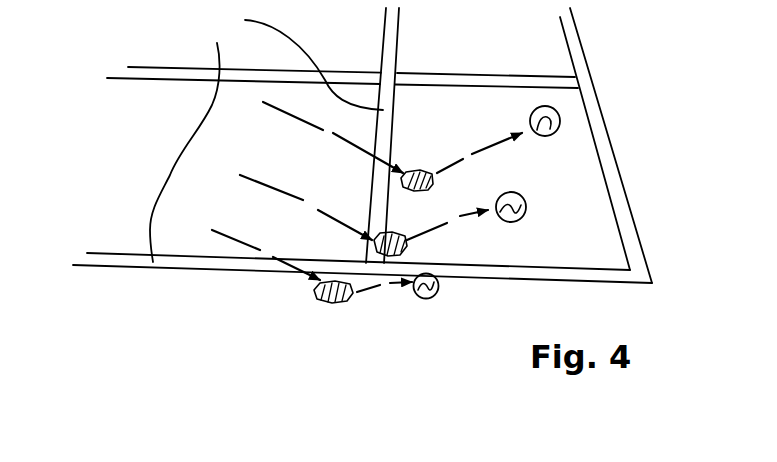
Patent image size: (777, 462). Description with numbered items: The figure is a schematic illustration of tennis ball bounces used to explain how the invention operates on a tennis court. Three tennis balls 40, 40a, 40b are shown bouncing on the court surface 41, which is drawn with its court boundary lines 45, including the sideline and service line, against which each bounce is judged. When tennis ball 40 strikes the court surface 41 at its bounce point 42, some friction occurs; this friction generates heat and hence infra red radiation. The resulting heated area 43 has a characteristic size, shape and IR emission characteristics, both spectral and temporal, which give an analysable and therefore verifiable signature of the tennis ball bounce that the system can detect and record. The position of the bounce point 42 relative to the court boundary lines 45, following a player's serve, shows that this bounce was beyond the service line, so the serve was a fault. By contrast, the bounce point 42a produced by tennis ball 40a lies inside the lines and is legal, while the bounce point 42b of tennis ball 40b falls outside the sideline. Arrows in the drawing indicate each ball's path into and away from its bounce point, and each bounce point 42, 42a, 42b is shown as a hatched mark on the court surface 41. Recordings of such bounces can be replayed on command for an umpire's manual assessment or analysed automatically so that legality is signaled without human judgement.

The tennis ball 40 is at (562, 118).
The tennis ball 40a is at (523, 196).
The tennis ball 40b is at (433, 297).
The court surface 41 is at (412, 135).
The bounce point 42 is at (425, 164).
The bounce point 42a is at (400, 236).
The bounce point 42b is at (318, 305).
The area 43 is at (433, 181).
The court boundary lines 45 is at (251, 71).